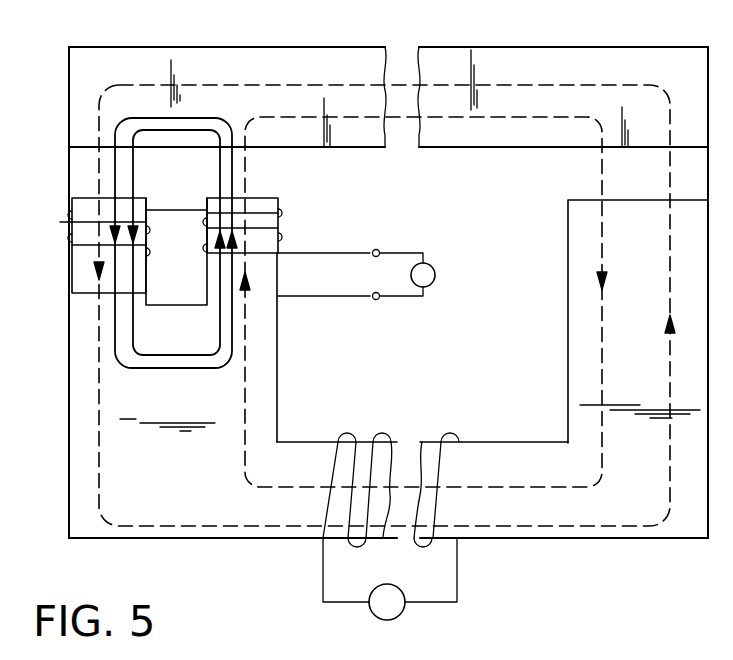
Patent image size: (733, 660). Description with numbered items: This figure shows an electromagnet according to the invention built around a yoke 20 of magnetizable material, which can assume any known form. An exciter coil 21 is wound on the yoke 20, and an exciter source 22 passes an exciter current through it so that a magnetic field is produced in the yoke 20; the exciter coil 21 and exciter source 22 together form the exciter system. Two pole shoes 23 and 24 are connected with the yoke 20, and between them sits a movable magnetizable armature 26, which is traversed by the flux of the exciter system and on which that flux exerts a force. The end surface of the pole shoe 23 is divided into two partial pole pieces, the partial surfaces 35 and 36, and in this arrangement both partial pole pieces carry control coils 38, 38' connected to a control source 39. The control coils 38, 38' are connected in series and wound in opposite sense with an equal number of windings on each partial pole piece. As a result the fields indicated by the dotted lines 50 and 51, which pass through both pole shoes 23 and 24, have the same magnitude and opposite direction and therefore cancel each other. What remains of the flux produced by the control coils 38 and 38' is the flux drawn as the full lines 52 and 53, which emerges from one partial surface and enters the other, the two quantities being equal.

The yoke 20 is at (568, 518).
The exciter coil 21 is at (350, 431).
The exciter source 22 is at (392, 610).
The pole shoe 23 is at (123, 398).
The pole shoe 24 is at (622, 385).
The armature 26 is at (361, 60).
The partial surface 35 is at (83, 255).
The partial surface 36 is at (258, 203).
The control coil 38 is at (324, 254).
The control coil 38' is at (40, 201).
The control source 39 is at (435, 275).
The dotted line field 50 is at (670, 256).
The dotted line field 51 is at (602, 327).
The full line flux 52 is at (160, 130).
The full line flux 53 is at (205, 118).